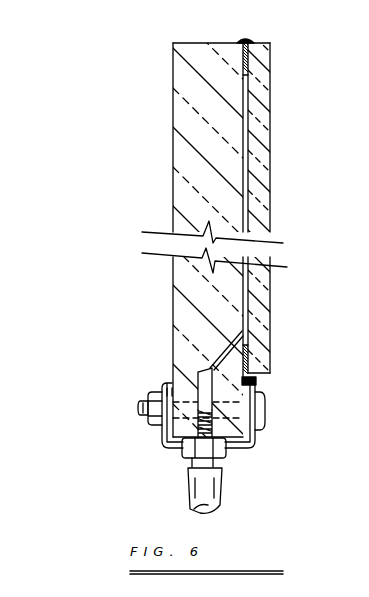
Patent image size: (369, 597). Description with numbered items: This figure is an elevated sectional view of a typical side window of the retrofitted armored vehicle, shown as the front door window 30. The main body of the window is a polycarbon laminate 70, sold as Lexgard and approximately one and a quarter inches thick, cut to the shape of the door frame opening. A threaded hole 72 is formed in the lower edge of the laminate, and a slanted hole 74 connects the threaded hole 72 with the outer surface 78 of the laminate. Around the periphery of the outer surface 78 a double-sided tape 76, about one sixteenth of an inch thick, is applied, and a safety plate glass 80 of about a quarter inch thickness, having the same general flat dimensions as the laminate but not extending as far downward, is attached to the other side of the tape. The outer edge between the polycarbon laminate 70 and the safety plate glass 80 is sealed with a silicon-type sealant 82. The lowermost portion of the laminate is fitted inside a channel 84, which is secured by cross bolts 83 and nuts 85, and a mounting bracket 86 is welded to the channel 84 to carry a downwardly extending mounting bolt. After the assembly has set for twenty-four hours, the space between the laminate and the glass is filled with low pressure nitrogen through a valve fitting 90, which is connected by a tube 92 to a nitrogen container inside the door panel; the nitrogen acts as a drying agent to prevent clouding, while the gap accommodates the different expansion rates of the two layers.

The front door window 30 is at (166, 124).
The polycarbon laminate 70 is at (213, 123).
The threaded hole 72 is at (200, 375).
The slanted hole 74 is at (218, 349).
The double-sided tape 76 is at (248, 68).
The outer surface 78 is at (243, 170).
The safety plate glass 80 is at (271, 196).
The silicon-type sealant 82 is at (246, 40).
The cross bolts 83 is at (138, 410).
The channel 84 is at (172, 383).
The nuts 85 is at (152, 416).
The mounting bracket 86 is at (166, 392).
The valve fitting 90 is at (226, 452).
The tube 92 is at (188, 490).